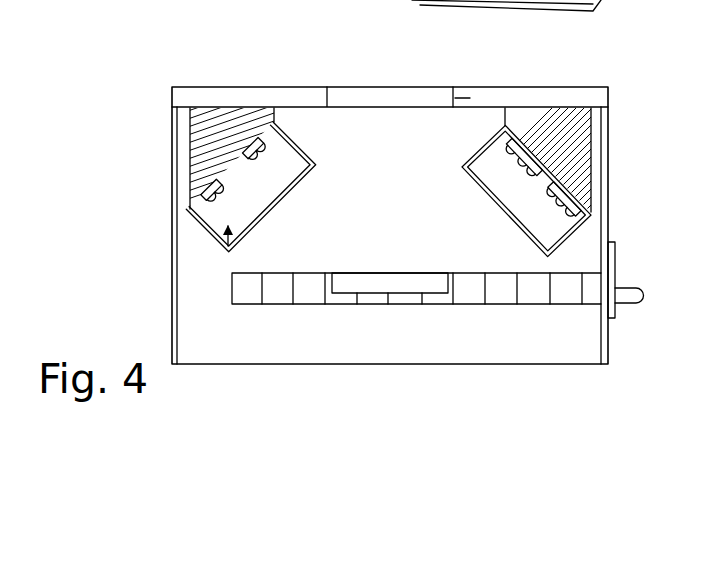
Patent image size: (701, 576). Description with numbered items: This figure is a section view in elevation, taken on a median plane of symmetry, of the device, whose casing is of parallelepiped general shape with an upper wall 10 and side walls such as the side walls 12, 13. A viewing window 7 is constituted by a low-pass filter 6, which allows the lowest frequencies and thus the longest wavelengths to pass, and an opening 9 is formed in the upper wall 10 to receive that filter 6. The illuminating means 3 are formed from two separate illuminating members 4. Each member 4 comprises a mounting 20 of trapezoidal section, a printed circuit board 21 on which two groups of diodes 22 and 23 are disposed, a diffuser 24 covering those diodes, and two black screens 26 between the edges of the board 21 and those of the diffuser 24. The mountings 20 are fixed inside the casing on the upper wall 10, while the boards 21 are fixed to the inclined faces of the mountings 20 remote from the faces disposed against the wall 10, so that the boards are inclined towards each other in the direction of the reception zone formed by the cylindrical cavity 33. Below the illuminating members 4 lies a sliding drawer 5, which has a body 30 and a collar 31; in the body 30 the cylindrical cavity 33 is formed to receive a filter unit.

The illuminating means 3 is at (184, 243).
The illuminating member 4 is at (473, 140).
The sliding drawer 5 is at (546, 372).
The low-pass filter 6 is at (432, 96).
The viewing window 7 is at (338, 62).
The opening 9 is at (455, 98).
The upper wall 10 is at (290, 97).
The side wall 12 is at (203, 397).
The side wall 13 is at (605, 197).
The mounting 20 is at (195, 145).
The printed circuit board 21 is at (224, 255).
The diode 22 is at (272, 145).
The diode 23 is at (264, 182).
The diffuser 24 is at (468, 180).
The black screen 26 is at (302, 148).
The body 30 is at (642, 296).
The collar 31 is at (614, 262).
The cylindrical cavity 33 is at (397, 304).